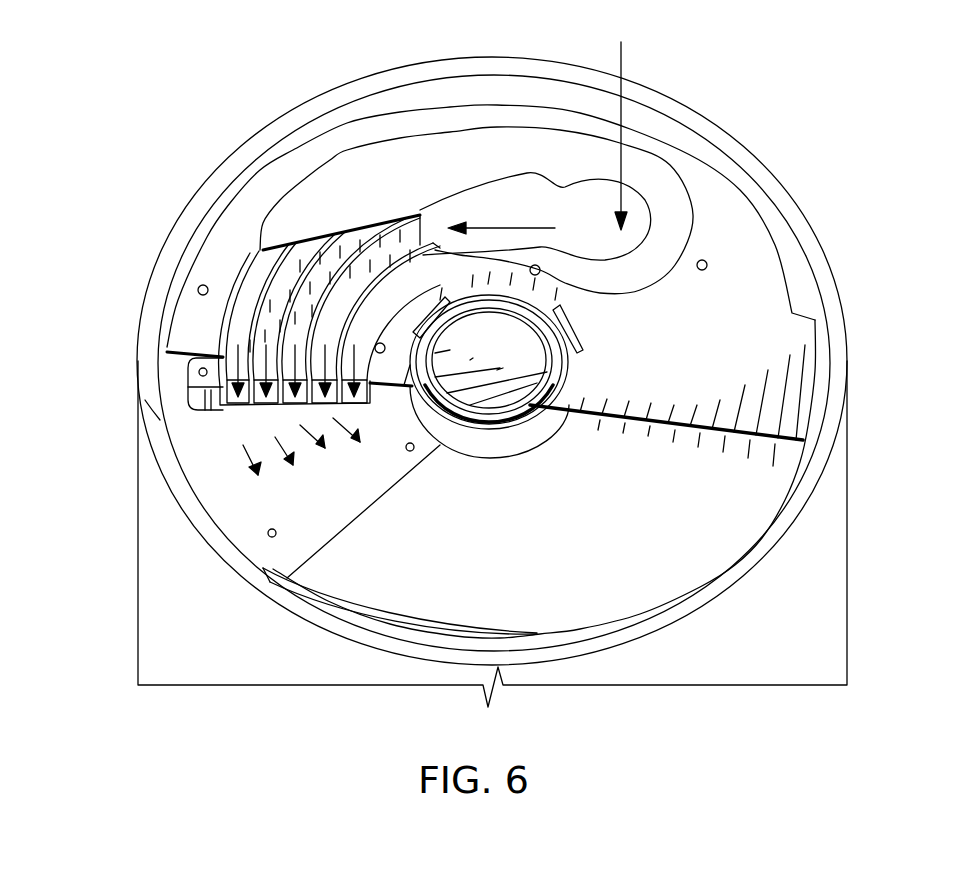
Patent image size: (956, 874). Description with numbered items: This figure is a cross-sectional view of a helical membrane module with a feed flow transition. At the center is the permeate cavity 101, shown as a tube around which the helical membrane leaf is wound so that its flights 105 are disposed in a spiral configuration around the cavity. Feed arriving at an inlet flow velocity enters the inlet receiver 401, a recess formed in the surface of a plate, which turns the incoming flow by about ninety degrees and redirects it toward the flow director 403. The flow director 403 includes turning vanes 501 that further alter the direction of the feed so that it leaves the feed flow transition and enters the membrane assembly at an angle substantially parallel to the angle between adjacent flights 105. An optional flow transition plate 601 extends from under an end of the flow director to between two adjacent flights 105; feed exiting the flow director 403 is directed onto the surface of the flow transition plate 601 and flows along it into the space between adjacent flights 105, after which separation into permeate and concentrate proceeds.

The permeate cavity 101 is at (495, 378).
The flights 105 is at (643, 557).
The inlet receiver 401 is at (603, 240).
The flow director 403 is at (380, 230).
The turning vanes 501 is at (260, 252).
The flow transition plate 601 is at (222, 505).